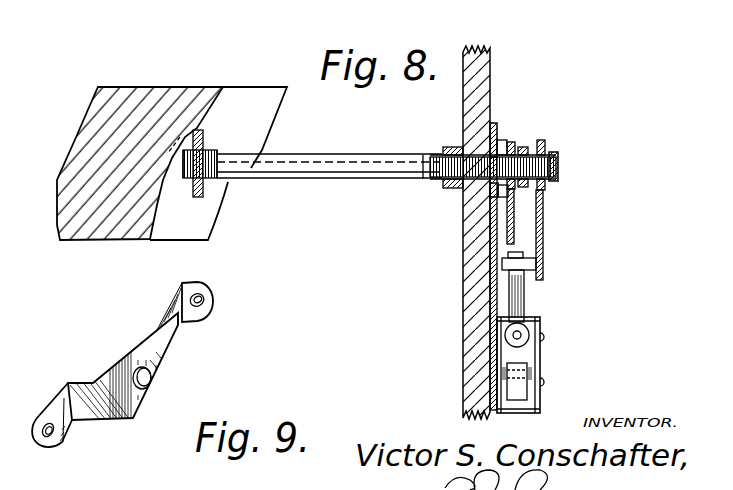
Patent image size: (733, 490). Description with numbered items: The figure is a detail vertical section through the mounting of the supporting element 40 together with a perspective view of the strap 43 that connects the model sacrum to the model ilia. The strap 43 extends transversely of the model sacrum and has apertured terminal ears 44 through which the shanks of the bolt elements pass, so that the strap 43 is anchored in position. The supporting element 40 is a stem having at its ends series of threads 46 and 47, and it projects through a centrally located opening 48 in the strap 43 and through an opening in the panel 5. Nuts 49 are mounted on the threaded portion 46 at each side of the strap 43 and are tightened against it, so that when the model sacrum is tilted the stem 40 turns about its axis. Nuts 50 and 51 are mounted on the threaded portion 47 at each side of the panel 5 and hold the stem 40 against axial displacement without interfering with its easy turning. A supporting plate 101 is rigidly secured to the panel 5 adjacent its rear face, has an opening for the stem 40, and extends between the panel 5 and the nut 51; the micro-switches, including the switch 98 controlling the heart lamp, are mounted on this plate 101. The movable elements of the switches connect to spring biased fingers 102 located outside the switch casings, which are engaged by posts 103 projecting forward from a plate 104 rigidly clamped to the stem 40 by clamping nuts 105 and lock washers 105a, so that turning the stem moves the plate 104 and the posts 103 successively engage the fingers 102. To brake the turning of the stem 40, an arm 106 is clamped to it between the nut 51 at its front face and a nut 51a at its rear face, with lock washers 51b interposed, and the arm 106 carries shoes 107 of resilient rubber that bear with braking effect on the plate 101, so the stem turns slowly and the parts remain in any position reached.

In FIG. 8, the panel 5 is at (472, 347).
In FIG. 8, the supporting element 40 is at (338, 154).
In FIG. 8, the strap 43 is at (203, 130).
In FIG. 9, the strap 43 is at (133, 348).
In FIG. 9, the apertured terminal ears 44 is at (210, 301).
In FIG. 8, the threads 46 is at (222, 178).
In FIG. 8, the threads 47 is at (423, 180).
In FIG. 8, the centrally located opening 48 is at (187, 176).
In FIG. 9, the centrally located opening 48 is at (153, 375).
In FIG. 8, the nuts 49 is at (206, 139).
In FIG. 8, the nut 50 is at (446, 150).
In FIG. 8, the nut 51 is at (497, 140).
In FIG. 8, the nut 51a is at (532, 143).
In FIG. 8, the lock washers 51b is at (513, 143).
In FIG. 8, the switch 98 is at (538, 355).
In FIG. 8, the supporting plate 101 is at (500, 285).
In FIG. 8, the spring biased fingers 102 is at (525, 293).
In FIG. 8, the posts 103 is at (533, 263).
In FIG. 8, the plate 104 is at (545, 240).
In FIG. 8, the clamping nuts 105 is at (545, 145).
In FIG. 8, the lock washers 105a is at (546, 191).
In FIG. 8, the arm 106 is at (543, 212).
In FIG. 8, the shoes 107 is at (494, 203).